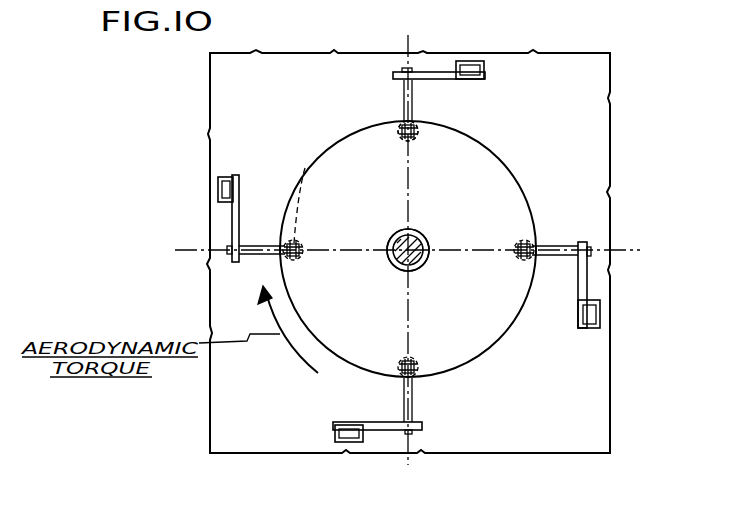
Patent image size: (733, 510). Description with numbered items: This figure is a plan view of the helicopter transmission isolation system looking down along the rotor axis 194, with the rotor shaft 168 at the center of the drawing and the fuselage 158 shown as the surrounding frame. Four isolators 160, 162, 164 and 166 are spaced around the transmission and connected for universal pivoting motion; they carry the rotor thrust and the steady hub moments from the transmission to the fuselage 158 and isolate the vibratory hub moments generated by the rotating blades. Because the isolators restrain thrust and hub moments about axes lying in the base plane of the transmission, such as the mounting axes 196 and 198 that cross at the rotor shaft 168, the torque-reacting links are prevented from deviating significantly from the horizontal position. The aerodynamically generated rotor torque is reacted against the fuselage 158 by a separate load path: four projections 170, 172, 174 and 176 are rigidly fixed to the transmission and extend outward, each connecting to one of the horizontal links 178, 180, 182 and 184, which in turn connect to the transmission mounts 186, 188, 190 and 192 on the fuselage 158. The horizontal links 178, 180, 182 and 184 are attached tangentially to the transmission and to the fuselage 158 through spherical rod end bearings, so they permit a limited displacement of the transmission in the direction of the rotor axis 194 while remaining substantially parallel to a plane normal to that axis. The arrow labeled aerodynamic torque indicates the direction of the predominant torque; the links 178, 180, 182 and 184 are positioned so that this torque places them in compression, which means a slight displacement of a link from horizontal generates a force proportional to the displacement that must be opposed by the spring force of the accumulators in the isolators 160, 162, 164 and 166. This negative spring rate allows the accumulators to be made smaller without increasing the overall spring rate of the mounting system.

The fuselage 158 is at (600, 113).
The isolator 160 is at (307, 188).
The isolator 162 is at (423, 358).
The isolator 164 is at (513, 267).
The isolator 166 is at (420, 139).
The rotor shaft 168 is at (393, 266).
The projection 170 is at (268, 259).
The projection 172 is at (413, 397).
The projection 174 is at (560, 245).
The projection 176 is at (400, 93).
The horizontal link 178 is at (232, 218).
The horizontal link 180 is at (395, 428).
The horizontal link 182 is at (582, 281).
The horizontal link 184 is at (440, 83).
The transmission mount 186 is at (220, 193).
The transmission mount 188 is at (323, 467).
The transmission mount 190 is at (598, 307).
The transmission mount 192 is at (505, 36).
The rotor axis 194 is at (423, 232).
The mounting axis 196 is at (405, 165).
The mounting axis 198 is at (350, 248).